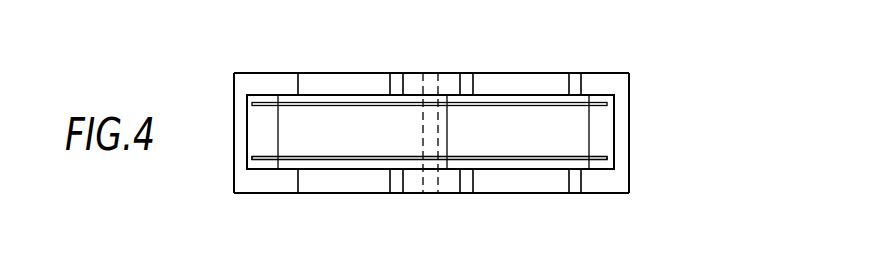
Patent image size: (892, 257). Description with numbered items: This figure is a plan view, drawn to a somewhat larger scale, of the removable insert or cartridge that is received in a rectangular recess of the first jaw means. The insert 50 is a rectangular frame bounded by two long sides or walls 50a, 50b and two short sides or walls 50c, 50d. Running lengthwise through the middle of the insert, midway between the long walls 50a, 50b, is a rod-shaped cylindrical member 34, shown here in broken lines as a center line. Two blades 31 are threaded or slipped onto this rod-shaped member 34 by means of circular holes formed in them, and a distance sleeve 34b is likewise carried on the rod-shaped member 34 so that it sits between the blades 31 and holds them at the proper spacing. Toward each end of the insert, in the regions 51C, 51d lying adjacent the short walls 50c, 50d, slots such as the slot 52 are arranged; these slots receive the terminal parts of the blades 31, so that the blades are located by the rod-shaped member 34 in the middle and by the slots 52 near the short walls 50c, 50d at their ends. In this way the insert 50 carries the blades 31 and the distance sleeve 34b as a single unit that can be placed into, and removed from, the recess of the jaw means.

The insert 50 is at (440, 136).
The long side wall 50a is at (267, 82).
The long side wall 50b is at (273, 185).
The short side wall 50c is at (234, 112).
The short side wall 50d is at (630, 150).
The slot 52 is at (260, 157).
The blade 31 is at (367, 106).
The rod-shaped member 34 is at (432, 72).
The distance sleeve 34b is at (452, 130).
The slot region adjacent short wall 51C is at (278, 138).
The slot region adjacent short wall 51d is at (597, 132).